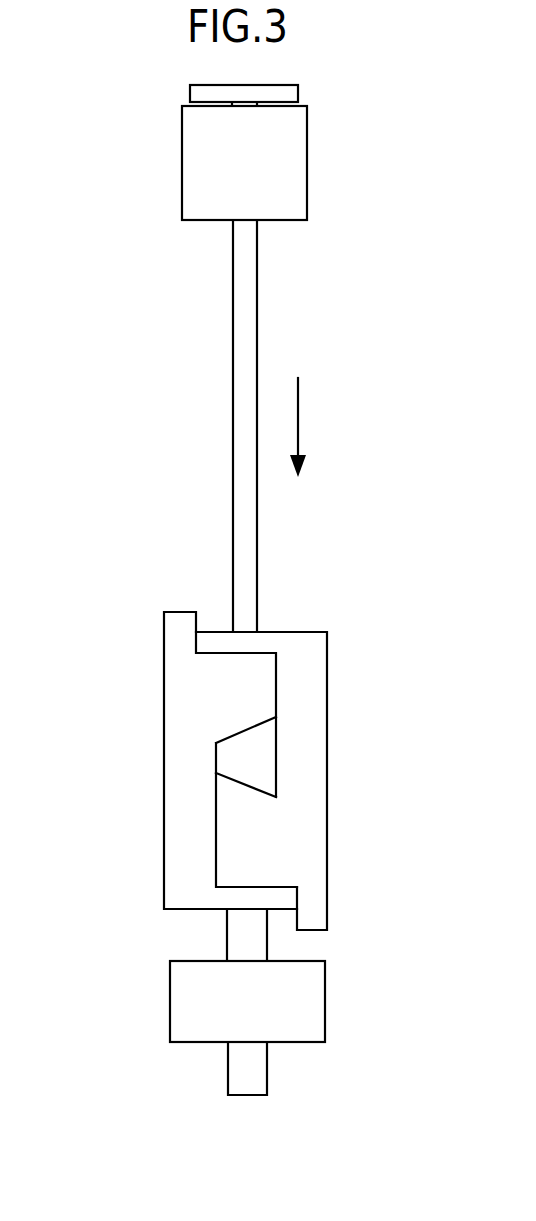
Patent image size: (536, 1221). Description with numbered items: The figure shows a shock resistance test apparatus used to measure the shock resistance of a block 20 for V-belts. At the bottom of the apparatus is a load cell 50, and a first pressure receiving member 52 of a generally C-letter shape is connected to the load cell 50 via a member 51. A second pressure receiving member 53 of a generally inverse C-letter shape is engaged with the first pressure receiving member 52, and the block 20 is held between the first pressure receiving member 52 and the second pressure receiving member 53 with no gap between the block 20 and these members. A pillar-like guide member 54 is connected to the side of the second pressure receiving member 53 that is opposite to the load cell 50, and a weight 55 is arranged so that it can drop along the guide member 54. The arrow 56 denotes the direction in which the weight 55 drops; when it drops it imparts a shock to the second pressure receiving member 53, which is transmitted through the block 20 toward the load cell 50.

The block 20 is at (230, 760).
The load cell 50 is at (183, 1007).
The member 51 is at (237, 943).
The first pressure receiving member 52 is at (183, 830).
The second pressure receiving member 53 is at (315, 763).
The guide member 54 is at (243, 486).
The weight 55 is at (200, 167).
The direction in which the weight drops 56 is at (298, 418).